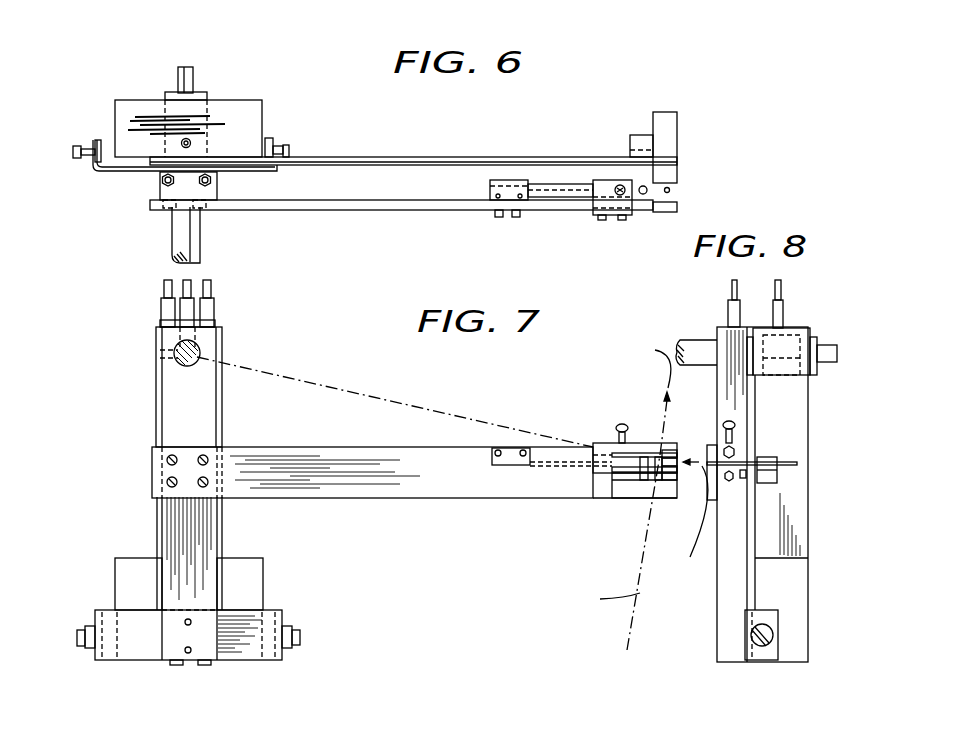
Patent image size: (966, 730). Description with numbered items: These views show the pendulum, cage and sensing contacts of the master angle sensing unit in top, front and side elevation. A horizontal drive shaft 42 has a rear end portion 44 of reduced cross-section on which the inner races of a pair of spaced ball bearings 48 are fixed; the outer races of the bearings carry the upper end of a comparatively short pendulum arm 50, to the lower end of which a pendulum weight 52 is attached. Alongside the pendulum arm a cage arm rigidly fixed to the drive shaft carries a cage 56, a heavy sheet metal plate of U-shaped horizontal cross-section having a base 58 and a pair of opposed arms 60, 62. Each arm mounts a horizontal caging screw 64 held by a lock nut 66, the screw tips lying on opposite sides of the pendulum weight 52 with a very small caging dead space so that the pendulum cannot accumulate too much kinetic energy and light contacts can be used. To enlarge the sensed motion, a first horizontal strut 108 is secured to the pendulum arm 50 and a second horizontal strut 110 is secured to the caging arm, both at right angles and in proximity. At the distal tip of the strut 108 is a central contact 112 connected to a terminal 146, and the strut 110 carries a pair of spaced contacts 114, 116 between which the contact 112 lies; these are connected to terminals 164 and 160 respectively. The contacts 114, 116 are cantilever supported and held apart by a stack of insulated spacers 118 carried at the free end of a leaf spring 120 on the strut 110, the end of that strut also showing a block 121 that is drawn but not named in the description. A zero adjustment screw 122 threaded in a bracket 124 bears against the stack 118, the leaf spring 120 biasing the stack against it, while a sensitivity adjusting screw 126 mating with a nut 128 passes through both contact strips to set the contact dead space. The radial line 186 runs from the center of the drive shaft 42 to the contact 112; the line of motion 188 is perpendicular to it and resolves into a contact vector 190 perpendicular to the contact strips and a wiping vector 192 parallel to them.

In FIG. 7, the drive shaft 42 is at (197, 349).
In FIG. 8, the drive shaft 42 is at (698, 342).
In FIG. 8, the portion of reduced cross-section 44 is at (832, 350).
In FIG. 8, the ball bearings 48 is at (750, 337).
In FIG. 7, the pendulum arm 50 is at (222, 524).
In FIG. 8, the pendulum arm 50 is at (800, 526).
In FIG. 7, the pendulum weight 52 is at (172, 523).
In FIG. 8, the pendulum weight 52 is at (802, 593).
In FIG. 6, the cage 56 is at (103, 183).
In FIG. 7, the cage 56 is at (240, 653).
In FIG. 8, the cage 56 is at (753, 620).
In FIG. 6, the base 58 is at (128, 175).
In FIG. 6, the arm 60 is at (99, 140).
In FIG. 6, the arm 62 is at (269, 138).
In FIG. 6, the caging screw 64 is at (289, 147).
In FIG. 7, the caging screw 64 is at (302, 634).
In FIG. 8, the caging screw 64 is at (763, 647).
In FIG. 6, the lock nut 66 is at (278, 146).
In FIG. 6, the first horizontal strut 108 is at (458, 148).
In FIG. 6, the second horizontal strut 110 is at (440, 188).
In FIG. 7, the second horizontal strut 110 is at (442, 482).
In FIG. 7, the central contact 112 is at (677, 460).
In FIG. 8, the central contact 112 is at (740, 459).
In FIG. 7, the contact 114 is at (668, 452).
In FIG. 8, the contact 114 is at (734, 452).
In FIG. 7, the contact 116 is at (676, 482).
In FIG. 8, the contact 116 is at (730, 479).
In FIG. 7, the stack of insulated spacers 118 is at (623, 470).
In FIG. 6, the leaf spring 120 is at (556, 188).
In FIG. 7, the leaf spring 120 is at (560, 470).
In FIG. 7, the end block 121 is at (610, 443).
In FIG. 6, the zero adjustment screw 122 is at (620, 184).
In FIG. 7, the zero adjustment screw 122 is at (627, 432).
In FIG. 6, the bracket 124 is at (596, 212).
In FIG. 7, the sensitivity adjusting screw 126 is at (643, 460).
In FIG. 7, the nut 128 is at (657, 472).
In FIG. 6, the terminal 146 is at (191, 143).
In FIG. 7, the terminal 146 is at (188, 280).
In FIG. 8, the terminal 146 is at (785, 315).
In FIG. 6, the terminal 160 is at (162, 180).
In FIG. 7, the terminal 160 is at (163, 288).
In FIG. 6, the terminal 164 is at (211, 181).
In FIG. 7, the terminal 164 is at (211, 288).
In FIG. 8, the terminal 164 is at (730, 299).
In FIG. 7, the radial line 186 is at (440, 407).
In FIG. 7, the line of motion 188 is at (628, 637).
In FIG. 7, the contact vector 190 is at (663, 394).
In FIG. 7, the wiping vector 192 is at (697, 465).